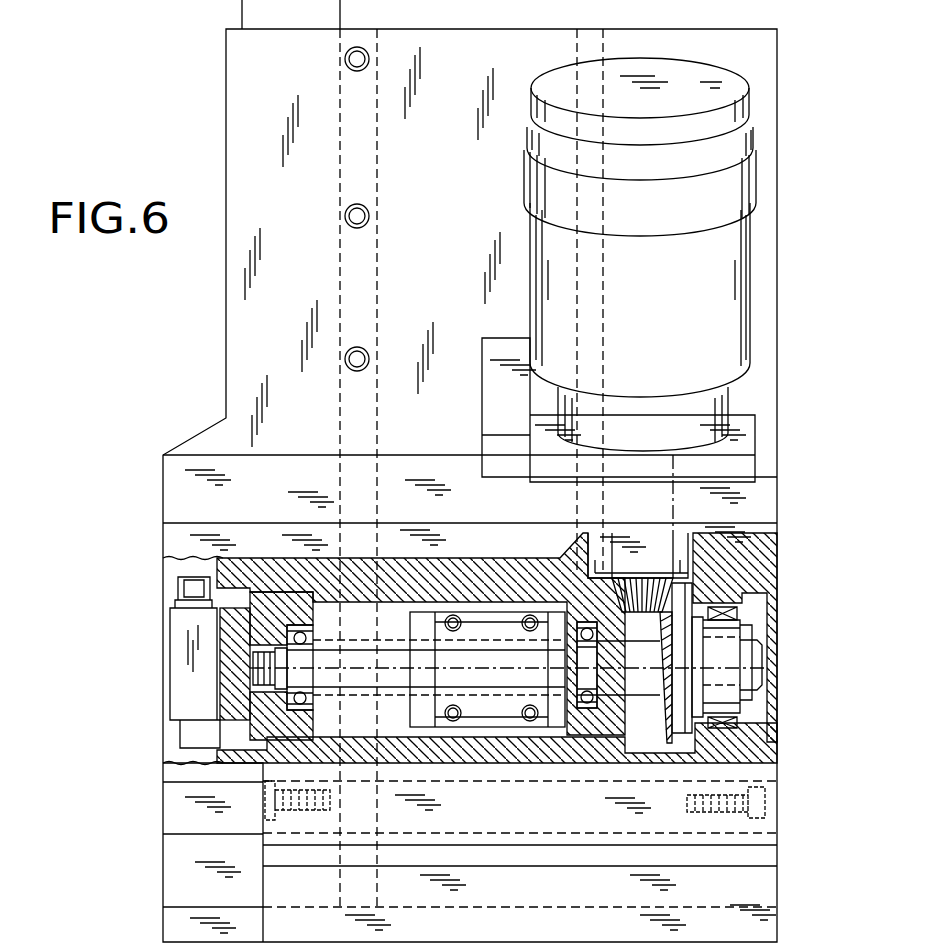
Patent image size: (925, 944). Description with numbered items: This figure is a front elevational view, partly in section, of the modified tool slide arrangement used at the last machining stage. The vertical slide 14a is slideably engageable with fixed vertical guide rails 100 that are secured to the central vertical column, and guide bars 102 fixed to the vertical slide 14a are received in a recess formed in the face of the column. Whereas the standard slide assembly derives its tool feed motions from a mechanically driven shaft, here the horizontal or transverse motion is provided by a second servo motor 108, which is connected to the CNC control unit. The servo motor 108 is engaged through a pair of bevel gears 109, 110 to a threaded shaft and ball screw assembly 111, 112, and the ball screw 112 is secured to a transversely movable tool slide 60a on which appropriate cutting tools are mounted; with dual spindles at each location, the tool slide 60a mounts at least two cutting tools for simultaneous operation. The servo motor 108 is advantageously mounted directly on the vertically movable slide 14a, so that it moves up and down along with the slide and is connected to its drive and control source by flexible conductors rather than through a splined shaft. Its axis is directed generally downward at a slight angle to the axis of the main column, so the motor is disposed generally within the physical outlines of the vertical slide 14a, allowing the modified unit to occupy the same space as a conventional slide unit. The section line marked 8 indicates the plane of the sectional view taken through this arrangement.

The vertical guide rails 100 is at (327, 13).
The guide bars 102 is at (378, 143).
The vertical slide 14a is at (462, 265).
The servo motor 108 is at (732, 265).
The bevel gear 109 is at (650, 578).
The bevel gear 110 is at (668, 648).
The threaded shaft 111 is at (575, 665).
The ball screw 112 is at (468, 676).
The transversely movable tool slide 60a is at (180, 866).
The section line 8- 8 is at (157, 672).